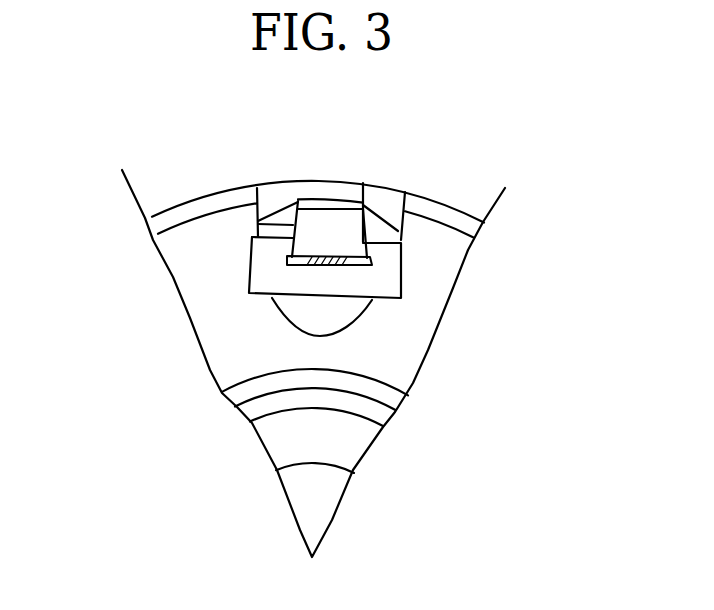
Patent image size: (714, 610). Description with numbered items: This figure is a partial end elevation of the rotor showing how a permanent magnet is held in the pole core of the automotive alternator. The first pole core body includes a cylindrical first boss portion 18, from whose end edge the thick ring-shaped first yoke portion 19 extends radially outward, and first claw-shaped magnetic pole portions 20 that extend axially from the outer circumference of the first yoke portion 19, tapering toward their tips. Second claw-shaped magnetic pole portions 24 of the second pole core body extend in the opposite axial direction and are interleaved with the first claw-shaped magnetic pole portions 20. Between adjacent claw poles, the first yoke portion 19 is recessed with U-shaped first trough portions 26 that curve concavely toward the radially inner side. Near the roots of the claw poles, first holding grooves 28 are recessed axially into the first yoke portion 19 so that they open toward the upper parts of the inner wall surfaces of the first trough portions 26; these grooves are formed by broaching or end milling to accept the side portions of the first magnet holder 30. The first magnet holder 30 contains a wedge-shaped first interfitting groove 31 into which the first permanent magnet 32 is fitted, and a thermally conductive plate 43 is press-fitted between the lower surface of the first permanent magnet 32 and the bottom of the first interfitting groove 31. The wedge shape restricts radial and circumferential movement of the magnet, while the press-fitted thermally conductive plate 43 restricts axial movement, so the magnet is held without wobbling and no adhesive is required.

The first boss portion 18 is at (280, 432).
The first yoke portion 19 is at (265, 333).
The first claw-shaped magnetic pole portions 20 is at (197, 212).
The second claw-shaped magnetic pole portions 24 is at (308, 183).
The first trough portions 26 is at (350, 317).
The first holding grooves 28 is at (398, 275).
The first magnet holder 30 is at (385, 255).
The first interfitting groove 31 is at (250, 247).
The first permanent magnet 32 is at (342, 225).
The thermally conductive plate 43 is at (318, 266).